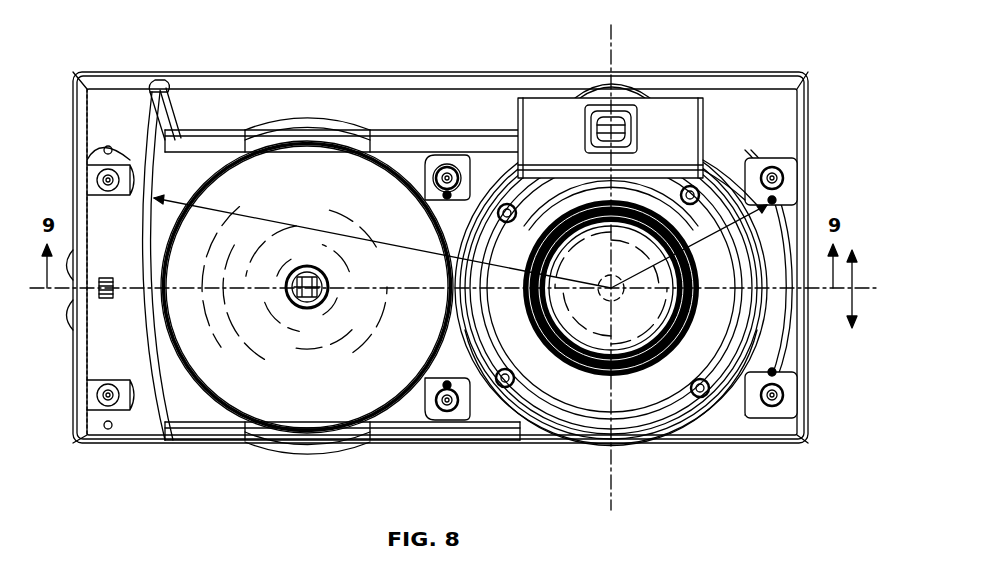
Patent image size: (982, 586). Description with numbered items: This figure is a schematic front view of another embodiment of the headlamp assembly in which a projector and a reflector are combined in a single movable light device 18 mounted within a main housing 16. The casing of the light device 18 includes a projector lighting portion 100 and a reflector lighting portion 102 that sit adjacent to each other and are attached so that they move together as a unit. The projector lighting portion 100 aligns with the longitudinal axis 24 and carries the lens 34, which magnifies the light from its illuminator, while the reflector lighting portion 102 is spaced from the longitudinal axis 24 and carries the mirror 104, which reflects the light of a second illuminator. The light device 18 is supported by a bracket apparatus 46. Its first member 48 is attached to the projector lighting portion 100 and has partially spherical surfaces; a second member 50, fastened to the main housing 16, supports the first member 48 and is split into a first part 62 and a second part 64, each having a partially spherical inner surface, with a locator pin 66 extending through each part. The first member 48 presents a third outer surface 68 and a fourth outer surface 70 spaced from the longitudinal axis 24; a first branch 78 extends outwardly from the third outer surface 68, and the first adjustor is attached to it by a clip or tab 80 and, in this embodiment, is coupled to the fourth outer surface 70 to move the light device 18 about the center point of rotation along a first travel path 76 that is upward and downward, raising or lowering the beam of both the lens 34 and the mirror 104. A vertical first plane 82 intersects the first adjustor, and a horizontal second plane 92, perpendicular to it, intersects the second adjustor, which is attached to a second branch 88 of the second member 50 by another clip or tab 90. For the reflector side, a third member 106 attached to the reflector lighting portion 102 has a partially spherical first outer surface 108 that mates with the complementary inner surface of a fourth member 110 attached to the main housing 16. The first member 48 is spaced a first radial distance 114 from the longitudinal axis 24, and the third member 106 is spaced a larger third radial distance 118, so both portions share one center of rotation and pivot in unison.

The main housing 16 is at (400, 105).
The light device 18 is at (482, 455).
The longitudinal axis 24 is at (605, 302).
The lens 34 is at (627, 330).
The bracket apparatus 46 is at (128, 451).
The first member 48 is at (768, 135).
The second member 50 is at (440, 172).
The first part 62 is at (765, 205).
The second part 64 is at (452, 170).
The locator pin 66 is at (100, 178).
The third outer surface 68 is at (641, 446).
The fourth outer surface 70 is at (680, 135).
The first travel path 76 is at (868, 281).
The first branch 78 is at (670, 98).
The clip or tab 80 is at (600, 110).
The first plane 82 is at (620, 30).
The second branch 88 is at (72, 265).
The clip or tab 90 is at (70, 330).
The second plane 92 is at (410, 322).
The projector lighting portion 100 is at (722, 449).
The reflector lighting portion 102 is at (308, 458).
The mirror 104 is at (246, 392).
The third member 106 is at (185, 120).
The first outer surface 108 is at (158, 125).
The fourth member 110 is at (128, 160).
The first radial distance 114 is at (788, 333).
The third radial distance 118 is at (300, 215).